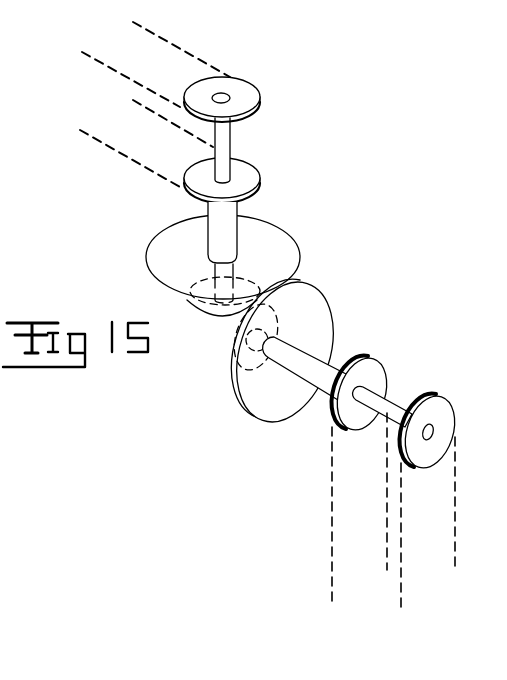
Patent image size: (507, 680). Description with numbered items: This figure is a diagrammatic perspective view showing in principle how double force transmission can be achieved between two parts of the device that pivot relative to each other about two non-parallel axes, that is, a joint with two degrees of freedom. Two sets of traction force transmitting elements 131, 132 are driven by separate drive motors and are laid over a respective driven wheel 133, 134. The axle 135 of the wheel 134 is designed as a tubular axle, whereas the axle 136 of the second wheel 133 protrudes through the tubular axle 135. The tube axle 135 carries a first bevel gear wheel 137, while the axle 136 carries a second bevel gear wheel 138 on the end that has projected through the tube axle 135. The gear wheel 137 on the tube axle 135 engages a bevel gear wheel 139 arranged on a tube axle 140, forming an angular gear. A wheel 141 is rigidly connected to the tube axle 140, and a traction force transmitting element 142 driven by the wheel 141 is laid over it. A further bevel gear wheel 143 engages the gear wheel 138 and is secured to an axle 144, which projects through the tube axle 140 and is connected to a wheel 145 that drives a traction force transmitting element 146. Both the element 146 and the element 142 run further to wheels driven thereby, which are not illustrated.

The traction force transmitting element 131 is at (178, 43).
The traction force transmitting element 132 is at (112, 149).
The driven wheel 133 is at (250, 97).
The driven wheel 134 is at (252, 175).
The tubular axle 135 is at (220, 233).
The axle 136 is at (228, 145).
The first bevel gear wheel 137 is at (167, 270).
The second bevel gear wheel 138 is at (217, 308).
The bevel gear wheel 139 is at (317, 307).
The tube axle 140 is at (313, 383).
The wheel 141 is at (375, 378).
The traction force transmitting element 142 is at (332, 520).
The further bevel gear wheel 143 is at (227, 347).
The axle 144 is at (387, 410).
The wheel 145 is at (443, 413).
The traction force transmitting element 146 is at (402, 605).